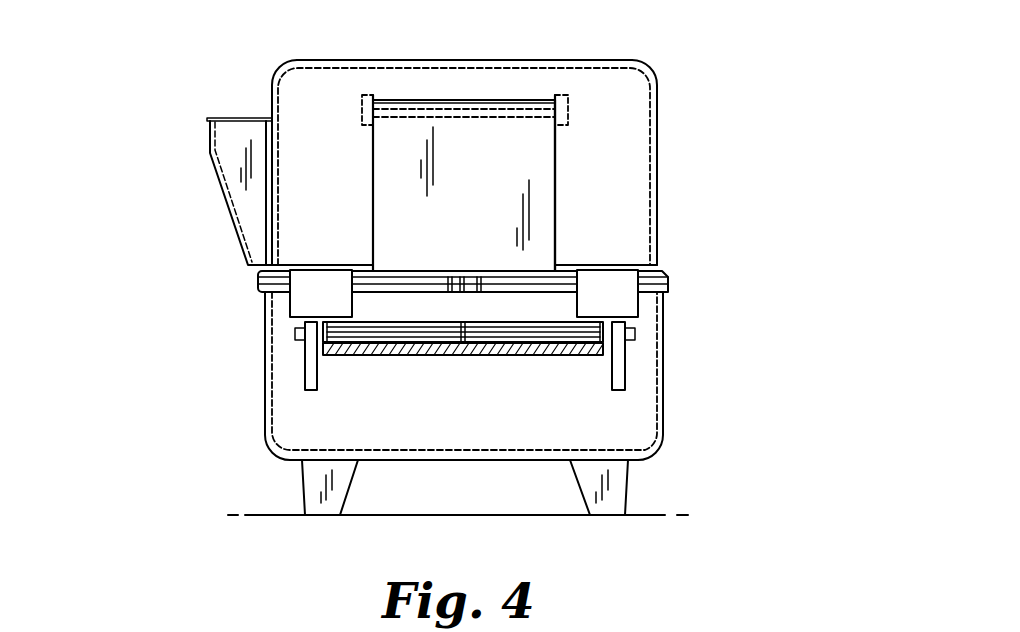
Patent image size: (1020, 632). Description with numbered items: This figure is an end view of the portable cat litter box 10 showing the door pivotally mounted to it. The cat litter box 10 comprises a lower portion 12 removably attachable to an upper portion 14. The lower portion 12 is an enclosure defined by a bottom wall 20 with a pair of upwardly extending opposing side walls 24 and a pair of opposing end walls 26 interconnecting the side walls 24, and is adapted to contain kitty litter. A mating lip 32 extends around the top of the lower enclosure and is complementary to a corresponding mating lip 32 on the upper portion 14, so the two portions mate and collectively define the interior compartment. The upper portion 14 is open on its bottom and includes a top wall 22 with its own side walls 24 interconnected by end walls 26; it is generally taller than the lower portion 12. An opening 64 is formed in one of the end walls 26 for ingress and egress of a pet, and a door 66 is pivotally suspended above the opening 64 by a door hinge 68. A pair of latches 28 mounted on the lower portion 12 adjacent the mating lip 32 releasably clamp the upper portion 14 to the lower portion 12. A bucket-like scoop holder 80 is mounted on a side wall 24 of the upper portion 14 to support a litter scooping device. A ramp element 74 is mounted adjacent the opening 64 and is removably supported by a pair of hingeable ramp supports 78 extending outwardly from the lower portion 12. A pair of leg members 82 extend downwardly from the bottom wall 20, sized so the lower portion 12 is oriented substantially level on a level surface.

The portable cat litter box 10 is at (150, 66).
The lower portion 12 is at (663, 445).
The upper portion 14 is at (660, 78).
The bottom wall 20 is at (503, 462).
The top wall 22 is at (362, 60).
The side walls 24 is at (268, 100).
The end walls 26 is at (344, 203).
The latches 28 is at (308, 295).
The mating lip 32 is at (668, 280).
The opening 64 is at (555, 182).
The door 66 is at (484, 207).
The door hinge 68 is at (568, 118).
The ramp element 74 is at (600, 345).
The ramp supports 78 is at (307, 372).
The scoop holder 80 is at (222, 195).
The leg members 82 is at (305, 498).